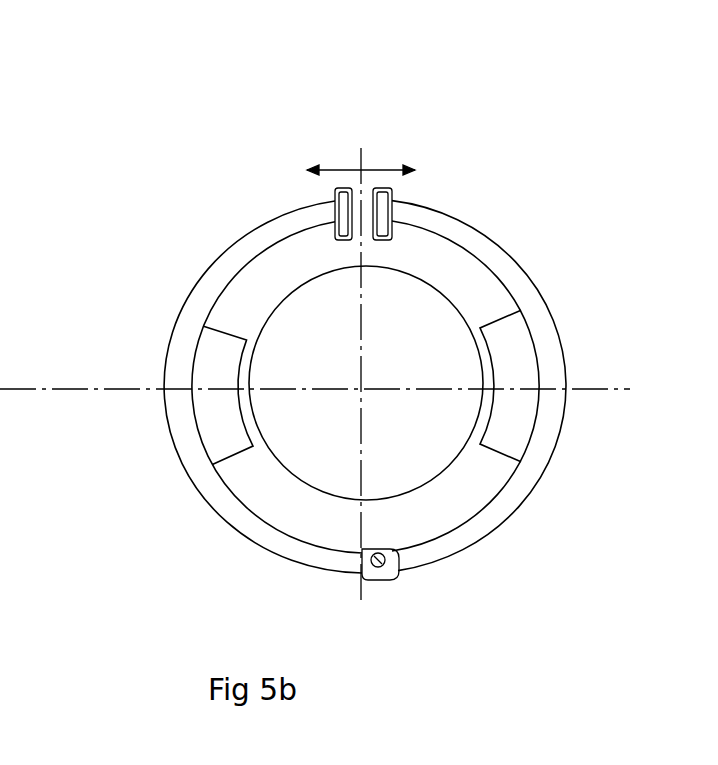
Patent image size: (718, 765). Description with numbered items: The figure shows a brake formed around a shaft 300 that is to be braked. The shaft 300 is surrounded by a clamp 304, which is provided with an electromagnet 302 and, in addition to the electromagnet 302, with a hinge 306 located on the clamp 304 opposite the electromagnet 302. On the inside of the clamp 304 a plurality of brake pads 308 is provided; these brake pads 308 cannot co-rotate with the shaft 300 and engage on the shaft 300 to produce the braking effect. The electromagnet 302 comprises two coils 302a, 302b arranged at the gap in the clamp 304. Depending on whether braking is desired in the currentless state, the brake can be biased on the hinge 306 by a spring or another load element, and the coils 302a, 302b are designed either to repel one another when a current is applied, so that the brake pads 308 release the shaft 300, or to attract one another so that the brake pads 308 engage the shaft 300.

The shaft 300 is at (278, 345).
The electromagnet 302 is at (377, 158).
The coil 302a is at (335, 195).
The coil 302b is at (392, 193).
The clamp 304 is at (259, 557).
The hinge 306 is at (385, 567).
The brake pad 308 is at (515, 343).